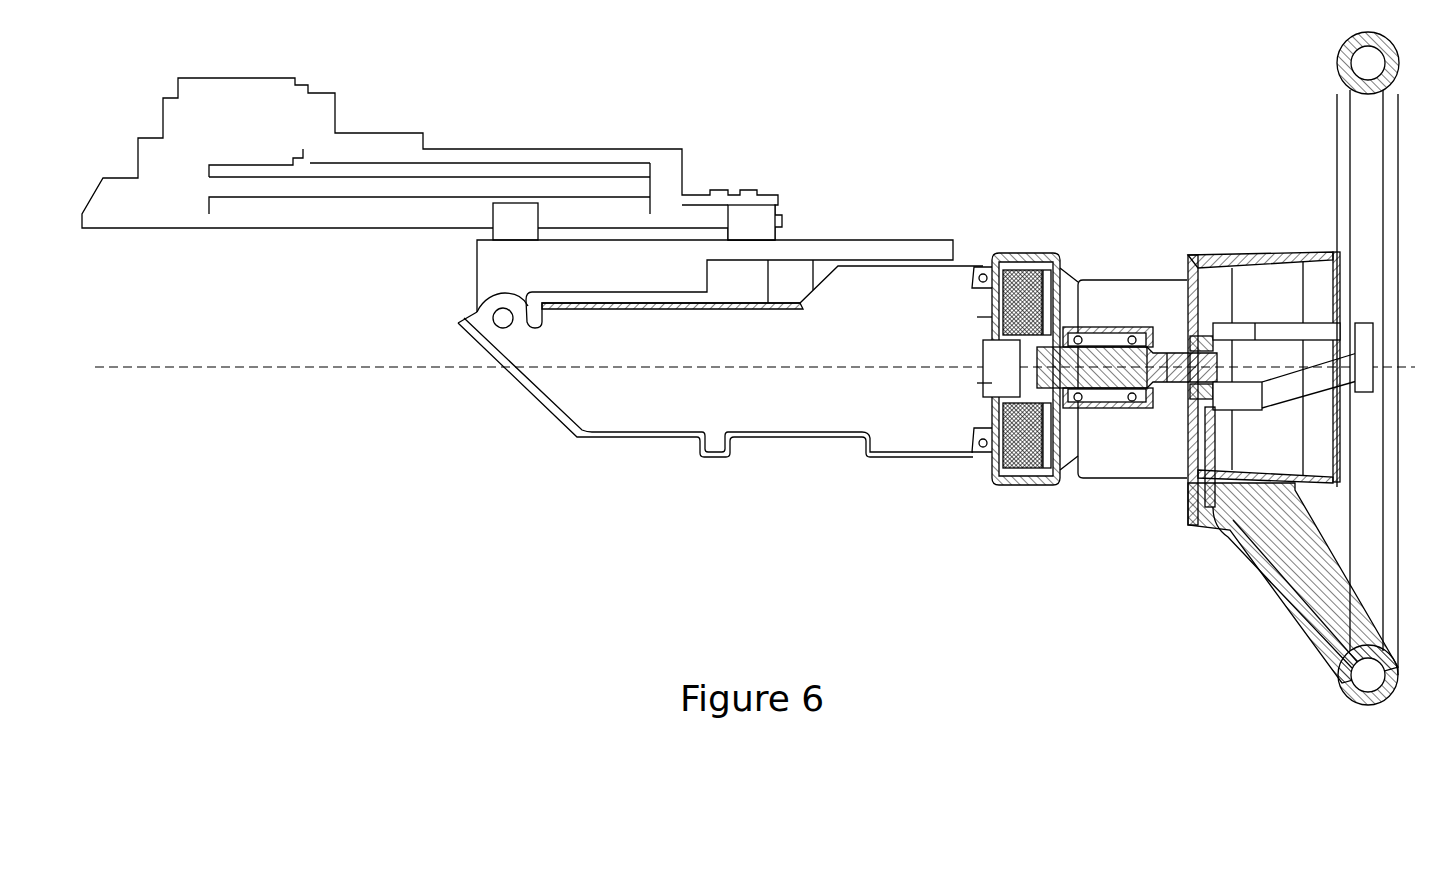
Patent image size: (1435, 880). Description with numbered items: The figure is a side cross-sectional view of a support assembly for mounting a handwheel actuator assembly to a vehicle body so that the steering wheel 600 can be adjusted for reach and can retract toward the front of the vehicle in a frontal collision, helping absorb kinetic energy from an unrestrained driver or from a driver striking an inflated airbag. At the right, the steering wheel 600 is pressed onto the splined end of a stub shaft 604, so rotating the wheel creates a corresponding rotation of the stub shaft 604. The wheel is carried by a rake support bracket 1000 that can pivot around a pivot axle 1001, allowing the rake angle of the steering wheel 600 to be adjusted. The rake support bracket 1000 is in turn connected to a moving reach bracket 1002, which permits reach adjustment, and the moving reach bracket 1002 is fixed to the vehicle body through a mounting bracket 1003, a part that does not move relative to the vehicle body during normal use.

The steering wheel 600 is at (1350, 690).
The stub shaft 604 is at (1108, 358).
The rake support bracket 1000 is at (538, 405).
The pivot axle 1001 is at (501, 318).
The moving reach bracket 1002 is at (880, 240).
The mounting bracket 1003 is at (665, 207).